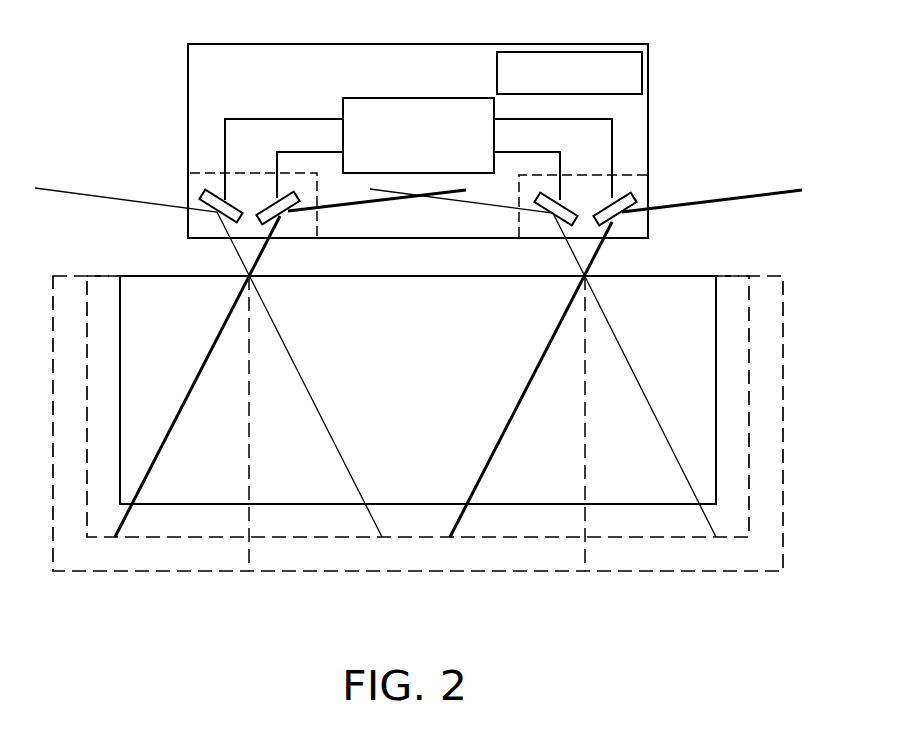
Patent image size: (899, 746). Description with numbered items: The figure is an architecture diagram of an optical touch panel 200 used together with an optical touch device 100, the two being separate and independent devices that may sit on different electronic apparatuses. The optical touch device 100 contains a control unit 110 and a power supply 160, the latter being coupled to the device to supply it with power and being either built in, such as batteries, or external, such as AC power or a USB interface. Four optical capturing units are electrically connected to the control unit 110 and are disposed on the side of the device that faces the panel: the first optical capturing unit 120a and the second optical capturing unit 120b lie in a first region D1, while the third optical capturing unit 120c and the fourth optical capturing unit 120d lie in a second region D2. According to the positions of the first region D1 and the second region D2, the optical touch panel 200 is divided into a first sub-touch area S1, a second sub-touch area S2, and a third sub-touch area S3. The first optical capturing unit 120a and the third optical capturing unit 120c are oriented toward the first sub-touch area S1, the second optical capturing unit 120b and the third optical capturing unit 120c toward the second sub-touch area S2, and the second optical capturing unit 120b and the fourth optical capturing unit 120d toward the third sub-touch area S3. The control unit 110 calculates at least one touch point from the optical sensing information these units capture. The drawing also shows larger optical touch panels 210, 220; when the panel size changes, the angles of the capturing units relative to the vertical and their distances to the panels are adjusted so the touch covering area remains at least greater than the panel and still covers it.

The optical touch device 100 is at (587, 45).
The control unit 110 is at (418, 97).
The power supply 160 is at (642, 73).
The first optical capturing unit 120a is at (198, 198).
The second optical capturing unit 120b is at (270, 210).
The third optical capturing unit 120c is at (563, 210).
The fourth optical capturing unit 120d is at (638, 200).
The first region D1 is at (195, 182).
The second region D2 is at (642, 182).
The optical touch panel 200 is at (533, 492).
The optical touch panel 210 is at (620, 527).
The optical touch panel 220 is at (665, 558).
The first sub-touch area S1 is at (196, 435).
The second sub-touch area S2 is at (409, 438).
The third sub-touch area S3 is at (625, 438).